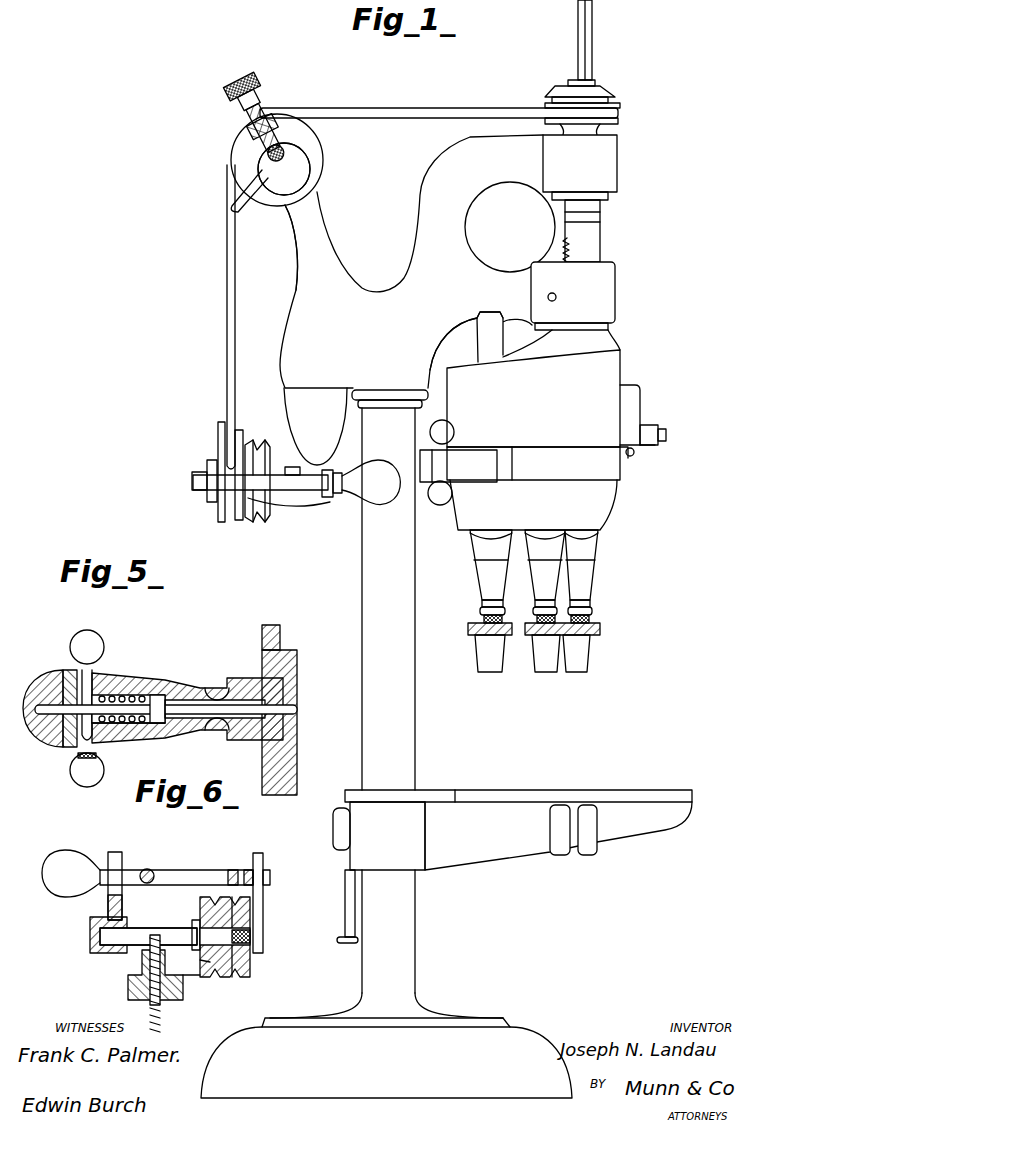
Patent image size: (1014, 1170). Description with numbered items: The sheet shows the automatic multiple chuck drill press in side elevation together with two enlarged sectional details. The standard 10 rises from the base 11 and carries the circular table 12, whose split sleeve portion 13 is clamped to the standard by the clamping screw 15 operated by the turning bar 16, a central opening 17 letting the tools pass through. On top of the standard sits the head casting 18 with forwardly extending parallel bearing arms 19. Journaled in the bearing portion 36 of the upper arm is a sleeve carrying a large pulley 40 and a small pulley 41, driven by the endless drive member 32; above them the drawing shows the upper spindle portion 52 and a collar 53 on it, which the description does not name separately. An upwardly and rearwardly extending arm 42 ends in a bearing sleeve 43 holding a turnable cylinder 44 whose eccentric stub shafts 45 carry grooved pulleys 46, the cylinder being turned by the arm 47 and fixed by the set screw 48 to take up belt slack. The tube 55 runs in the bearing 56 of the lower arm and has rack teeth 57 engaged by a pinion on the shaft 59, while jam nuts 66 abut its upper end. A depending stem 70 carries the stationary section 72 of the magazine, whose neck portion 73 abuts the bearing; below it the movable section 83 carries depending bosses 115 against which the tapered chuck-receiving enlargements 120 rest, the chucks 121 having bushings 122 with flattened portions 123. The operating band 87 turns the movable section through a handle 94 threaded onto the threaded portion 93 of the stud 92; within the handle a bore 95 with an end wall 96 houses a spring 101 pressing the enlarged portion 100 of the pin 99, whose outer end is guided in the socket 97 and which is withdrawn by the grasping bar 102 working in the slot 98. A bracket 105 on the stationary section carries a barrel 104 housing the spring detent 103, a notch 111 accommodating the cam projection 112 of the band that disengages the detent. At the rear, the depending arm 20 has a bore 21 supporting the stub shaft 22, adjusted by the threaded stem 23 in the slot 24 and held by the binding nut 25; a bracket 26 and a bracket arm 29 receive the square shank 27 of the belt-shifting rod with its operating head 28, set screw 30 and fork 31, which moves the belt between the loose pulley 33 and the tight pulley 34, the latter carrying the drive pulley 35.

In FIG. 1, the standard 10 is at (363, 558).
In FIG. 1, the base 11 is at (450, 1040).
In FIG. 1, the table 12 is at (526, 800).
In FIG. 1, the split sleeve portion 13 is at (345, 832).
In FIG. 1, the clamping screw 15 is at (340, 838).
In FIG. 1, the turning bar 16 is at (345, 915).
In FIG. 1, the central opening 17 is at (580, 800).
In FIG. 1, the head casting 18 is at (417, 261).
In FIG. 1, the bearing arms 19 is at (515, 165).
In FIG. 1, the depending and laterally extending arm 20 is at (312, 440).
In FIG. 6, the depending and laterally extending arm 20 is at (108, 953).
In FIG. 6, the longitudinal bore 21 is at (90, 930).
In FIG. 6, the stub shaft 22 is at (184, 928).
In FIG. 6, the threaded stem 23 is at (162, 998).
In FIG. 6, the longitudinal slot 24 is at (138, 958).
In FIG. 6, the binding nut 25 is at (235, 978).
In FIG. 6, the bracket 26 is at (122, 865).
In FIG. 1, the shank portion 27 is at (330, 492).
In FIG. 6, the shank portion 27 is at (195, 872).
In FIG. 1, the operating head 28 is at (371, 482).
In FIG. 6, the operating head 28 is at (68, 860).
In FIG. 6, the bracket arm 29 is at (263, 890).
In FIG. 1, the set screw 30 is at (296, 470).
In FIG. 6, the set screw 30 is at (152, 870).
In FIG. 1, the fork 31 is at (218, 432).
In FIG. 6, the fork 31 is at (240, 858).
In FIG. 1, the endless drive member 32 is at (438, 110).
In FIG. 1, the loose pulley 33 is at (228, 518).
In FIG. 6, the loose pulley 33 is at (252, 948).
In FIG. 1, the tight pulley 34 is at (258, 522).
In FIG. 6, the tight pulley 34 is at (225, 970).
In FIG. 1, the pulley 35 is at (285, 500).
In FIG. 6, the pulley 35 is at (198, 990).
In FIG. 1, the bearing portion 36 is at (603, 162).
In FIG. 1, the large pulley 40 is at (605, 124).
In FIG. 1, the small pulley 41 is at (605, 92).
In FIG. 1, the arm 42 is at (307, 218).
In FIG. 1, the bearing sleeve 43 is at (300, 145).
In FIG. 1, the cylinder 44 is at (312, 160).
In FIG. 1, the stub shafts 45 is at (245, 165).
In FIG. 1, the grooved pulleys 46 is at (238, 150).
In FIG. 1, the arm 47 is at (240, 210).
In FIG. 1, the set screw 48 is at (260, 89).
In FIG. 1, the spindle shaft 52 is at (593, 46).
In FIG. 1, the collar 53 is at (578, 62).
In FIG. 1, the tube 55 is at (603, 241).
In FIG. 1, the bearing 56 is at (589, 292).
In FIG. 1, the teeth 57 is at (562, 251).
In FIG. 1, the shaft 59 is at (556, 295).
In FIG. 1, the jam nuts 66 is at (603, 216).
In FIG. 1, the depending stem 70 is at (482, 320).
In FIG. 1, the stationary section 72 is at (598, 386).
In FIG. 1, the neck portion 73 is at (561, 342).
In FIG. 1, the movable section 83 is at (598, 501).
In FIG. 1, the operating band 87 is at (558, 462).
In FIG. 5, the stud 92 is at (236, 678).
In FIG. 5, the threaded portion 93 is at (218, 736).
In FIG. 1, the operating handle 94 is at (455, 457).
In FIG. 5, the operating handle 94 is at (120, 678).
In FIG. 5, the longitudinal bore 95 is at (175, 695).
In FIG. 5, the end wall 96 is at (105, 722).
In FIG. 5, the socket 97 is at (50, 668).
In FIG. 5, the vertical slot 98 is at (70, 742).
In FIG. 5, the pin 99 is at (290, 704).
In FIG. 5, the enlarged portion 100 is at (165, 720).
In FIG. 5, the coiled spring 101 is at (140, 725).
In FIG. 1, the grasping bar 102 is at (438, 505).
In FIG. 5, the grasping bar 102 is at (95, 675).
In FIG. 1, the spring detent 103 is at (667, 434).
In FIG. 1, the barrel 104 is at (650, 447).
In FIG. 1, the bracket 105 is at (645, 402).
In FIG. 1, the notch 111 is at (634, 455).
In FIG. 1, the cam projection 112 is at (626, 448).
In FIG. 1, the bosses 115 is at (592, 546).
In FIG. 1, the chuck-receiving enlargements 120 is at (488, 578).
In FIG. 1, the chucks 121 is at (572, 675).
In FIG. 1, the bushing 122 is at (533, 610).
In FIG. 1, the flattened shank portion 123 is at (560, 613).